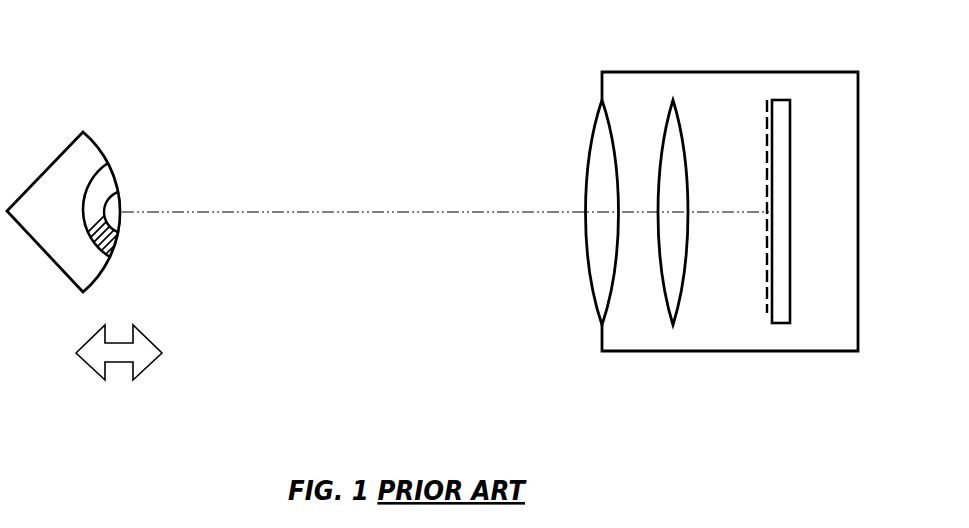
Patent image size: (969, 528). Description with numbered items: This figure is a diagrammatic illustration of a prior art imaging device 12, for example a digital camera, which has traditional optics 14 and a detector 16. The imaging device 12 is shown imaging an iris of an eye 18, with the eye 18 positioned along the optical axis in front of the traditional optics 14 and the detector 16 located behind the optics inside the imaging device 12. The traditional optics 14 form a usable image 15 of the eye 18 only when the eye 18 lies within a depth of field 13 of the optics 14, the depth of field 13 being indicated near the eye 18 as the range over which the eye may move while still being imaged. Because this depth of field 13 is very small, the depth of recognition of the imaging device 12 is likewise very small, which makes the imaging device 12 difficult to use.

The imaging device 12 is at (857, 72).
The depth of field 13 is at (120, 362).
The traditional optics 14 is at (700, 66).
The usable image 15 is at (770, 302).
The detector 16 is at (778, 100).
The eye 18 is at (95, 140).